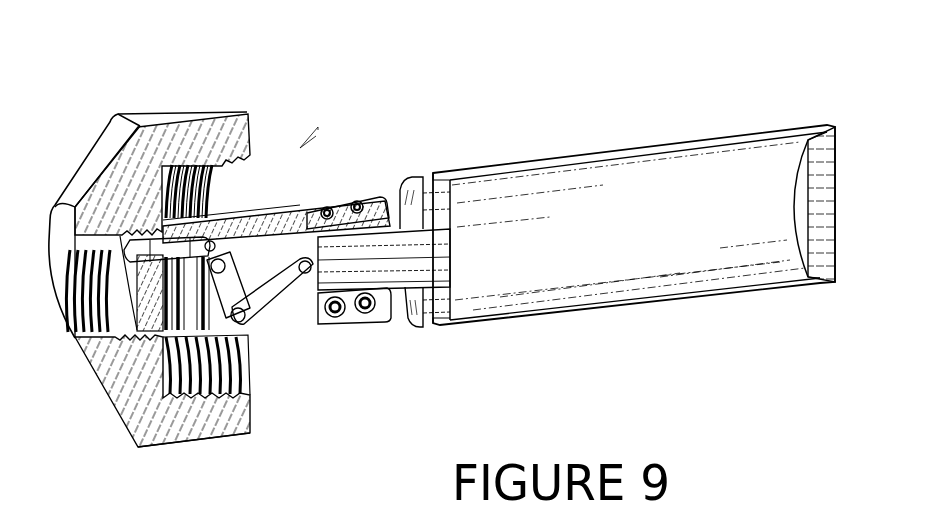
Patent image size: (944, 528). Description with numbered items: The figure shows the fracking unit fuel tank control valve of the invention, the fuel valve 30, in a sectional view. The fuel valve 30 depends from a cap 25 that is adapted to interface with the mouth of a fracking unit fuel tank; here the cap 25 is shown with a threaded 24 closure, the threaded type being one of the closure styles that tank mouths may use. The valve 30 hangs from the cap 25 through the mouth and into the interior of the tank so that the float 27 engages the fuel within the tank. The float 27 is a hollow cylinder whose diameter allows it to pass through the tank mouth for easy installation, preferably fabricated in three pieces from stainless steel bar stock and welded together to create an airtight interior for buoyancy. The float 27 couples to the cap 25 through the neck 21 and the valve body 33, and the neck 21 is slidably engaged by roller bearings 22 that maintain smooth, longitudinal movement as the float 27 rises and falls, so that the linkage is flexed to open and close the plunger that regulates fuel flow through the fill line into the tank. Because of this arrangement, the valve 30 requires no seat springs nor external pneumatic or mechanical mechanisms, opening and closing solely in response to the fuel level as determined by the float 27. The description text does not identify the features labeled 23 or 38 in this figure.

The neck 21 is at (393, 280).
The roller bearings 22 is at (360, 202).
The collar 23 is at (48, 320).
The threaded closure 24 is at (228, 169).
The cap 25 is at (208, 443).
The float 27 is at (600, 150).
The fuel valve 30 is at (300, 148).
The valve body 33 is at (300, 318).
The handle interior 38 is at (630, 293).